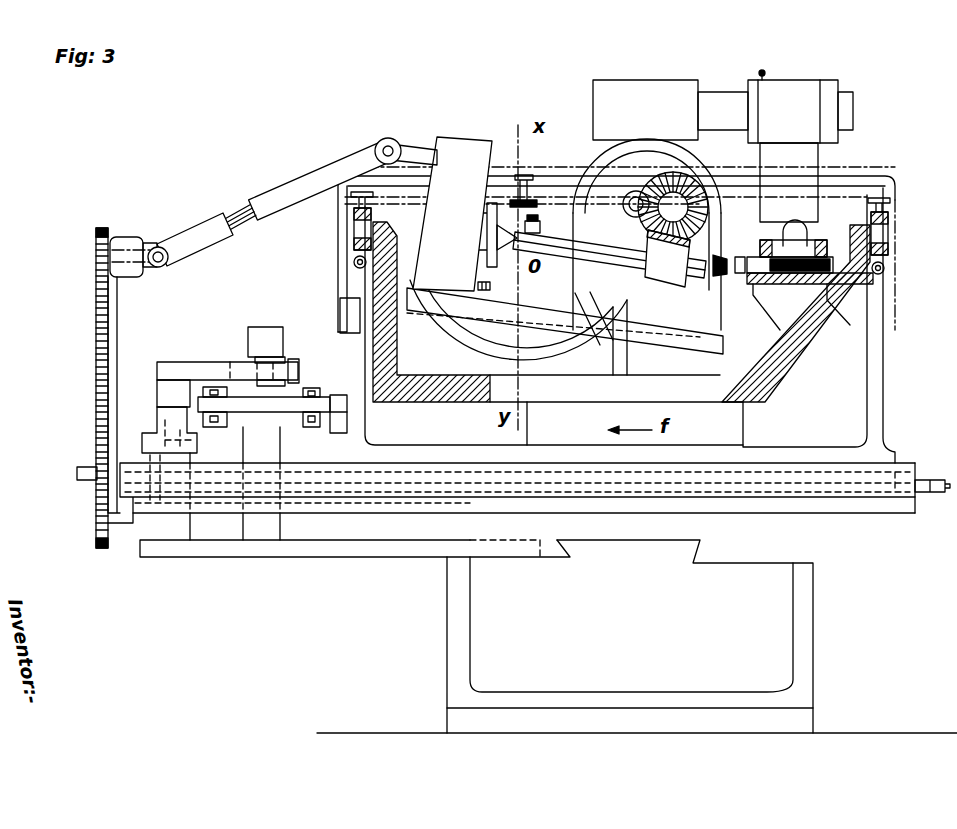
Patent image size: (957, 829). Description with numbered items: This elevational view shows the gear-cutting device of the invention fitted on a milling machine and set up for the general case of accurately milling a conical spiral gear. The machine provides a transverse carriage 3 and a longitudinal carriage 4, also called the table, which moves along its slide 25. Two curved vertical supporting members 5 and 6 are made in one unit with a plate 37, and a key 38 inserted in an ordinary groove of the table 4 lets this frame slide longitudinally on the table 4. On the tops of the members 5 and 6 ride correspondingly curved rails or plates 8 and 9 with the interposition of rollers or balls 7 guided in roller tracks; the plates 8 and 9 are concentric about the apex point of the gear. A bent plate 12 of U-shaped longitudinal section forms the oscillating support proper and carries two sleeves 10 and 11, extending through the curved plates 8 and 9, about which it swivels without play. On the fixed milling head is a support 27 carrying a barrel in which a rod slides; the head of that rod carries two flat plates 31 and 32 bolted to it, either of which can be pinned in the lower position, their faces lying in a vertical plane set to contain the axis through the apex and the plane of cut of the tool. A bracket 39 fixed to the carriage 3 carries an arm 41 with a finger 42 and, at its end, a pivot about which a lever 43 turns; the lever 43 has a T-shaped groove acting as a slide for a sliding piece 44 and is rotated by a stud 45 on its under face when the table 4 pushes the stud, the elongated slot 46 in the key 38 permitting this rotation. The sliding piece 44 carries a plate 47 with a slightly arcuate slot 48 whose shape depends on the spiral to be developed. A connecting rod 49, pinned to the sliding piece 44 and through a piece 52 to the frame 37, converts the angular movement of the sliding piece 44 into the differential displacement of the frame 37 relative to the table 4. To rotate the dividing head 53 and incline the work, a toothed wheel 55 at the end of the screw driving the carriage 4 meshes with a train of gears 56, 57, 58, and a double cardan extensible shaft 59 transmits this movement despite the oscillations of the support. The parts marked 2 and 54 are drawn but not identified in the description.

The grinding wheel 2 is at (665, 180).
The transverse carriage 3 is at (520, 543).
The longitudinal carriage 4 is at (863, 513).
The curved vertical member 5 is at (884, 383).
The curved vertical member 6 is at (345, 300).
The rollers or balls 7 is at (354, 262).
The curved rail or plate 8 is at (888, 226).
The curved rail or plate 9 is at (355, 210).
The sleeve 10 is at (890, 245).
The sleeve 11 is at (354, 236).
The bent plate 12 is at (790, 360).
The slide 25 is at (910, 513).
The support 27 is at (595, 98).
The flat plate 31 is at (808, 228).
The flat plate 32 is at (818, 160).
The plate 37 is at (700, 452).
The key 38 is at (900, 478).
The bracket 39 is at (352, 545).
The arm 41 is at (262, 327).
The finger 42 is at (275, 360).
The lever 43 is at (150, 440).
The sliding piece 44 is at (172, 380).
The stud 45 is at (185, 442).
The elongated slot 46 is at (172, 482).
The plate 47 is at (210, 362).
The arcuate slot 48 is at (298, 368).
The connecting rod 49 is at (270, 412).
The piece 52 is at (667, 276).
The dividing head 53 is at (460, 145).
The stop 54 is at (80, 480).
The toothed wheel 55 is at (98, 525).
The gear of train 56 is at (96, 395).
The gear of train 57 is at (97, 325).
The gear of train 58 is at (112, 250).
The double cardan extensible shaft 59 is at (263, 204).